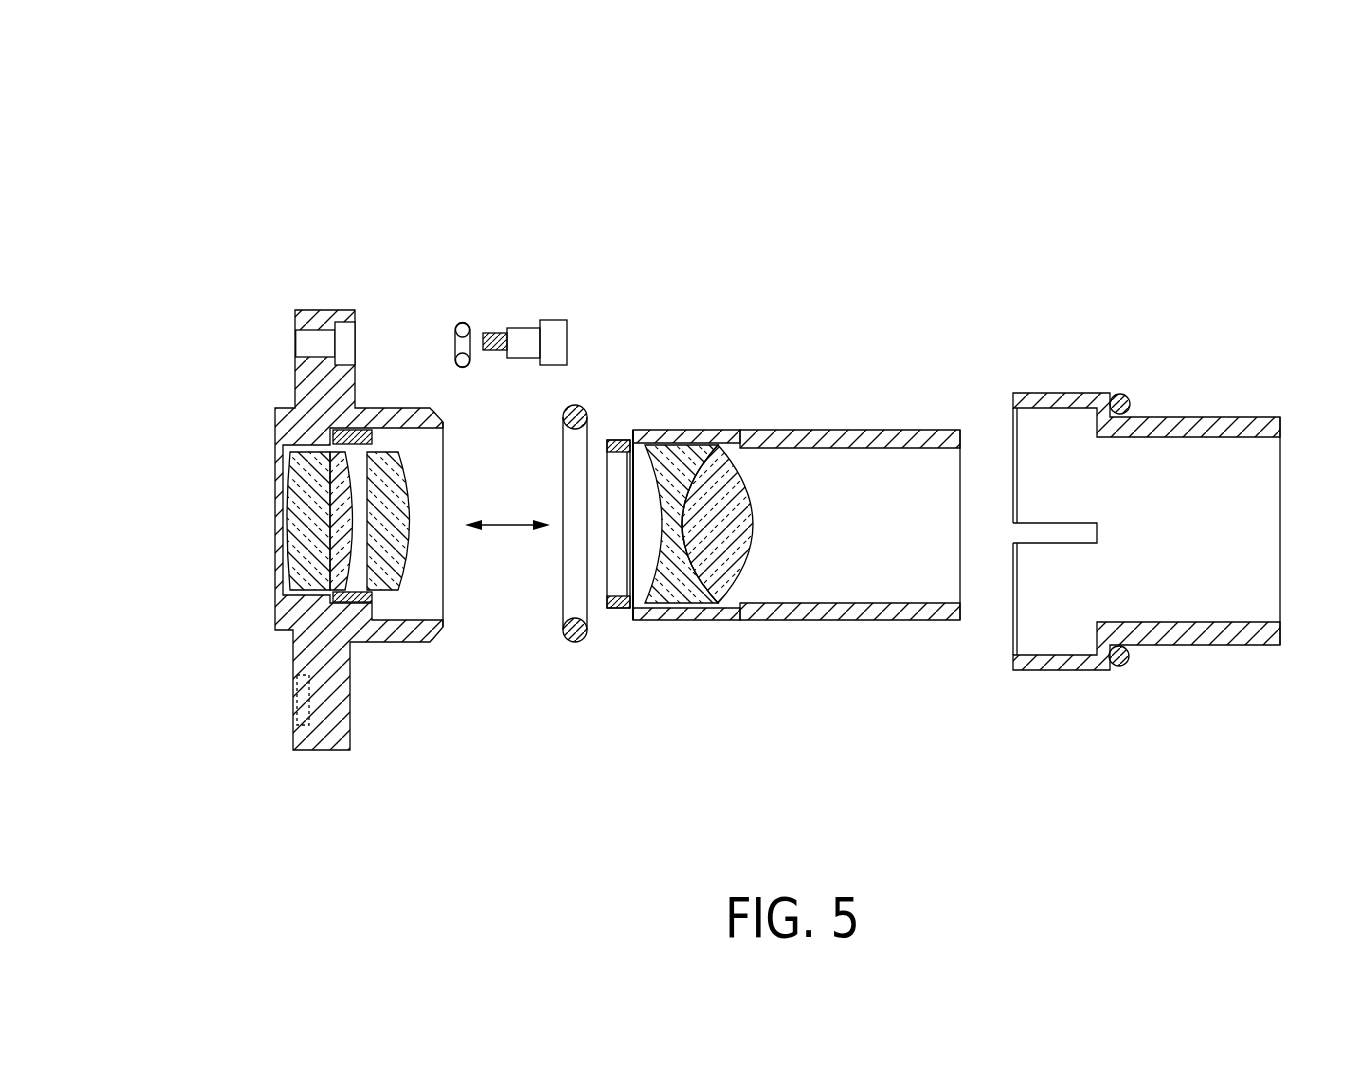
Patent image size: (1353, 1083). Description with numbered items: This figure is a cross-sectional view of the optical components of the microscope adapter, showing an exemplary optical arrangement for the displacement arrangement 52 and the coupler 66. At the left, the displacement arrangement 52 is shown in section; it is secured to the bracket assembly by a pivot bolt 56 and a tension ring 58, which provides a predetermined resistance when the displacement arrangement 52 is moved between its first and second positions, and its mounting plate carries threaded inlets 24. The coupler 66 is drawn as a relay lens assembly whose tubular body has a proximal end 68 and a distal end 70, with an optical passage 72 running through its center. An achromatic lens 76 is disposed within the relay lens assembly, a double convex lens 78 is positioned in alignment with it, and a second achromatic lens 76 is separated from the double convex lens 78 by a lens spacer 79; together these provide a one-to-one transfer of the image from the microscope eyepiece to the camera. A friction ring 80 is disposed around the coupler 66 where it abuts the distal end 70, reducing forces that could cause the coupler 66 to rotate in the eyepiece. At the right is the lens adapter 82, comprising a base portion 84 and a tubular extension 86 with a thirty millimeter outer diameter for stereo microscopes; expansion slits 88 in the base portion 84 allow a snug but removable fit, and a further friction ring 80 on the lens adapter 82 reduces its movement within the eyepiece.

The displacement arrangement 52 is at (359, 403).
The threaded inlets 24 is at (408, 393).
The lens spacer 79 is at (345, 430).
The achromatic lens 76 is at (300, 548).
The double convex lens 78 is at (391, 578).
The tension ring 58 is at (462, 320).
The pivot bolt 56 is at (568, 330).
The coupler 66 is at (808, 403).
The proximal end 68 is at (647, 428).
The distal end 70 is at (958, 430).
The optical passage 72 is at (881, 560).
The friction ring 80 is at (575, 642).
The lens adapter 82 is at (1153, 506).
The base portion 84 is at (1050, 672).
The tubular extension 86 is at (1225, 417).
The expansion slits 88 is at (1078, 520).